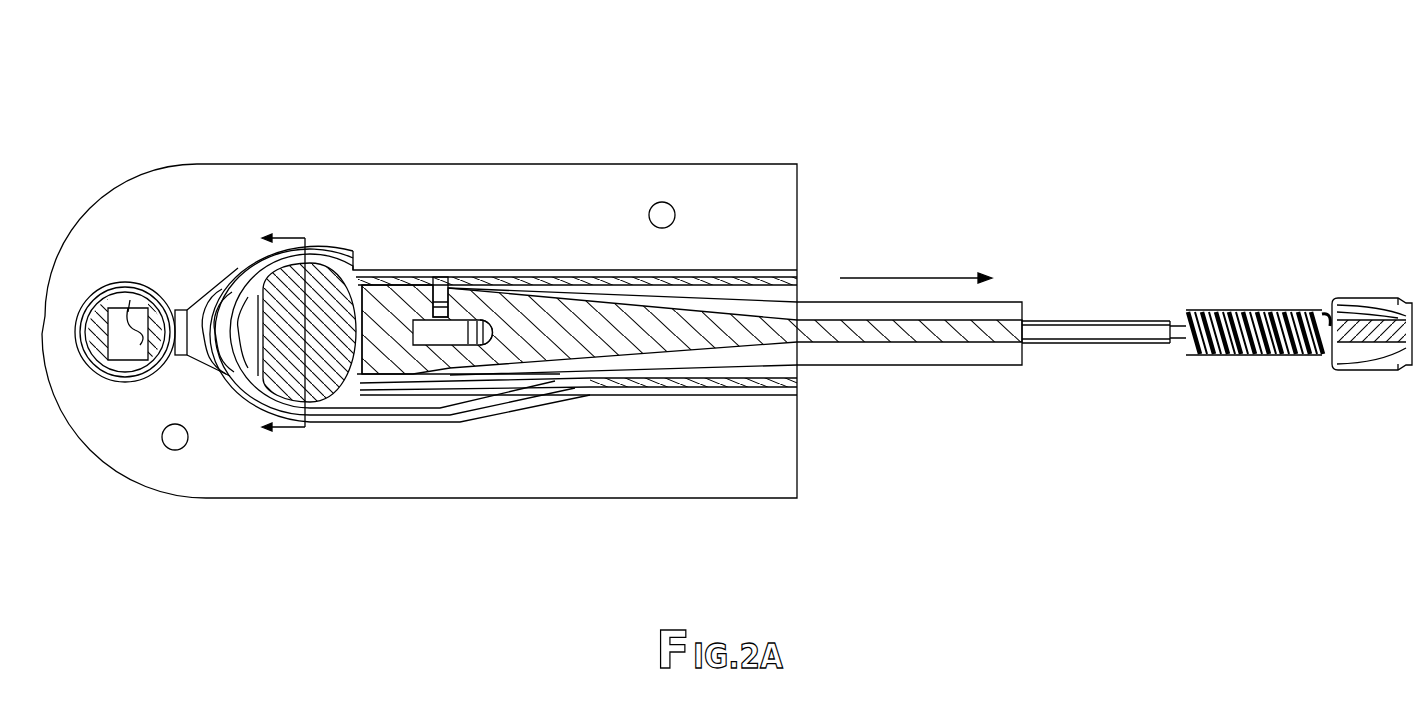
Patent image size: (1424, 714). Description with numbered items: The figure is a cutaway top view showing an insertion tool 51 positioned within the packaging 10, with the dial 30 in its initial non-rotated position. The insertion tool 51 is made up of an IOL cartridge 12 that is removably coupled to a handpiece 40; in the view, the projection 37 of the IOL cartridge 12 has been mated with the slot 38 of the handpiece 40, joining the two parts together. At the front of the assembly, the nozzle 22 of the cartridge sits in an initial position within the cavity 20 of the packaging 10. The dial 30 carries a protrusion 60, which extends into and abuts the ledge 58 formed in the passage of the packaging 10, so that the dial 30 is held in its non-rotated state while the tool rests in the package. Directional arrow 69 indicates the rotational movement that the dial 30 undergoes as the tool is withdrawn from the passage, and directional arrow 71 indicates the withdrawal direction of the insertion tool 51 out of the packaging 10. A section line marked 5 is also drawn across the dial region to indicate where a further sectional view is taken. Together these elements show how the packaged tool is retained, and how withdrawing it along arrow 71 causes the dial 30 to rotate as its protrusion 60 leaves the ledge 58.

The packaging 10 is at (189, 99).
The IOL cartridge 12 is at (361, 410).
The cavity 20 is at (112, 357).
The nozzle 22 is at (129, 300).
The dial 30 is at (243, 398).
The projection 37 is at (440, 326).
The slot 38 is at (442, 272).
The handpiece 40 is at (702, 320).
The insertion tool 51 is at (720, 380).
The ledge 58 is at (401, 283).
The protrusion 60 is at (315, 272).
The directional arrow 69 is at (338, 230).
The directional arrow 71 is at (890, 278).
The section line 5- 5 is at (273, 333).